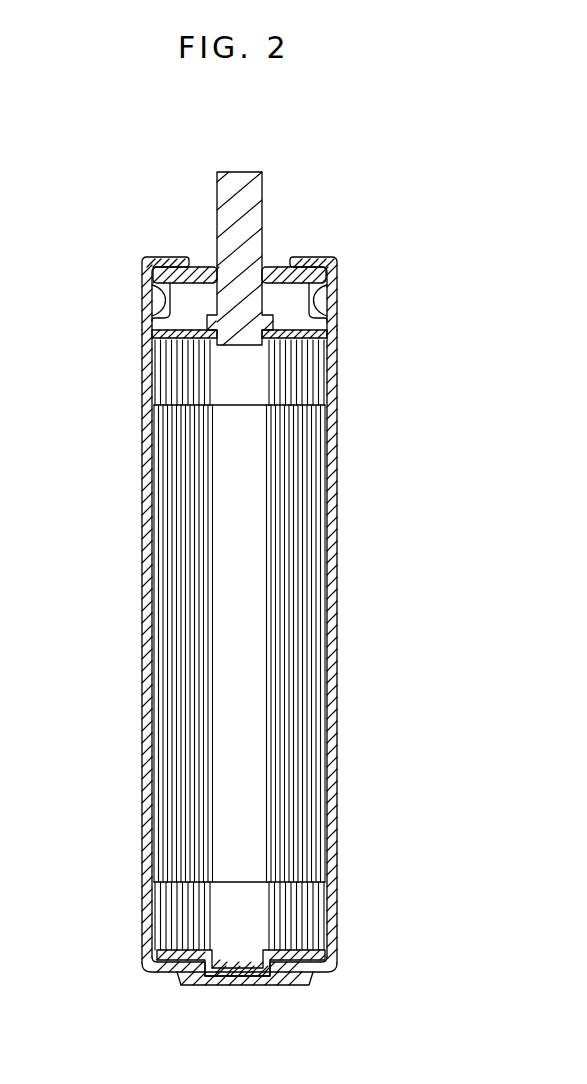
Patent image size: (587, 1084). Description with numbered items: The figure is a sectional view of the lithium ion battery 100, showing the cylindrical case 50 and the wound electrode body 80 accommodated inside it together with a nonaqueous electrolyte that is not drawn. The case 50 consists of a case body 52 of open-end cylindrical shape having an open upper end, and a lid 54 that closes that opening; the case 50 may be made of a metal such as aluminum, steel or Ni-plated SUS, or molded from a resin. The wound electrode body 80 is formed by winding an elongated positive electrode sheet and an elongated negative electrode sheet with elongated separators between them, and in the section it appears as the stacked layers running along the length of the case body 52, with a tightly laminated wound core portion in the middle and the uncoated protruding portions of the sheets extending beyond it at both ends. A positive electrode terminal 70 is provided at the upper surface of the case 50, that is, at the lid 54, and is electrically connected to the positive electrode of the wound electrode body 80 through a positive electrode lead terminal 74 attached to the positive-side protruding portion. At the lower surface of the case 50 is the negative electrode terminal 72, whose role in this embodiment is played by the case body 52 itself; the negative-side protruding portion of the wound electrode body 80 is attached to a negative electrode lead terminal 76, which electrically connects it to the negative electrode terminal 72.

The lithium ion battery 100 is at (369, 229).
The case 50 is at (141, 760).
The case body 52 is at (337, 738).
The lid 54 is at (203, 268).
The positive electrode terminal 70 is at (256, 172).
The negative electrode terminal 72 is at (284, 977).
The positive electrode lead terminal 74 is at (288, 329).
The negative electrode lead terminal 76 is at (178, 974).
The wound electrode body 80 is at (158, 883).